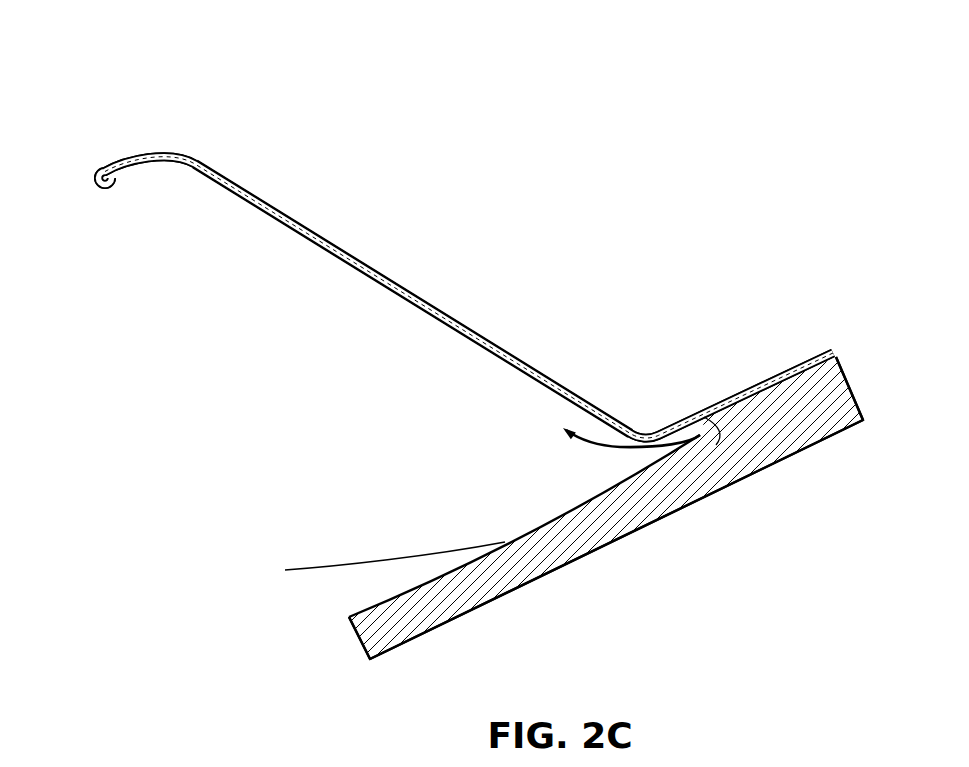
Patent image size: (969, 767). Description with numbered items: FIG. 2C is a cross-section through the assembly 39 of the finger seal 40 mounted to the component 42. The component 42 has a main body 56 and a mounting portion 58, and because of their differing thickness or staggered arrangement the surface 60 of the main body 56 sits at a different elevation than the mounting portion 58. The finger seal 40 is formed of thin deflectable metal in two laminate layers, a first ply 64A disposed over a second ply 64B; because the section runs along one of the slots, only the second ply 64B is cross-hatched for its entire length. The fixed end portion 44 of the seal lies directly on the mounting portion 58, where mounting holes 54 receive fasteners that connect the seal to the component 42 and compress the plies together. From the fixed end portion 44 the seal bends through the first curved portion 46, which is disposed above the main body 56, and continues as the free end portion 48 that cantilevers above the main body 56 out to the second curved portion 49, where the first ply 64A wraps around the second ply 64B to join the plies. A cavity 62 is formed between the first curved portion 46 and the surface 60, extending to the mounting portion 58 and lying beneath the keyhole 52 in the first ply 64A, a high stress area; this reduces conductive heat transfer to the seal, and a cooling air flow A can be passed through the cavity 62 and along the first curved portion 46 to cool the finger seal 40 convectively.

The assembly 39 is at (68, 98).
The finger seal 40 is at (553, 258).
The component 42 is at (637, 562).
The fixed end portion 44 is at (801, 350).
The first curved portion 46 is at (603, 412).
The free end portion 48 is at (333, 230).
The second curved portion 49 is at (107, 163).
The keyhole 52 is at (690, 405).
The mounting holes 54 is at (708, 259).
The main body 56 is at (477, 577).
The mounting portion 58 is at (828, 400).
The surface 60 is at (355, 613).
The cavity 62 is at (624, 463).
The first ply 64A is at (385, 275).
The second ply 64B is at (365, 272).
The cooling air flow A is at (358, 560).